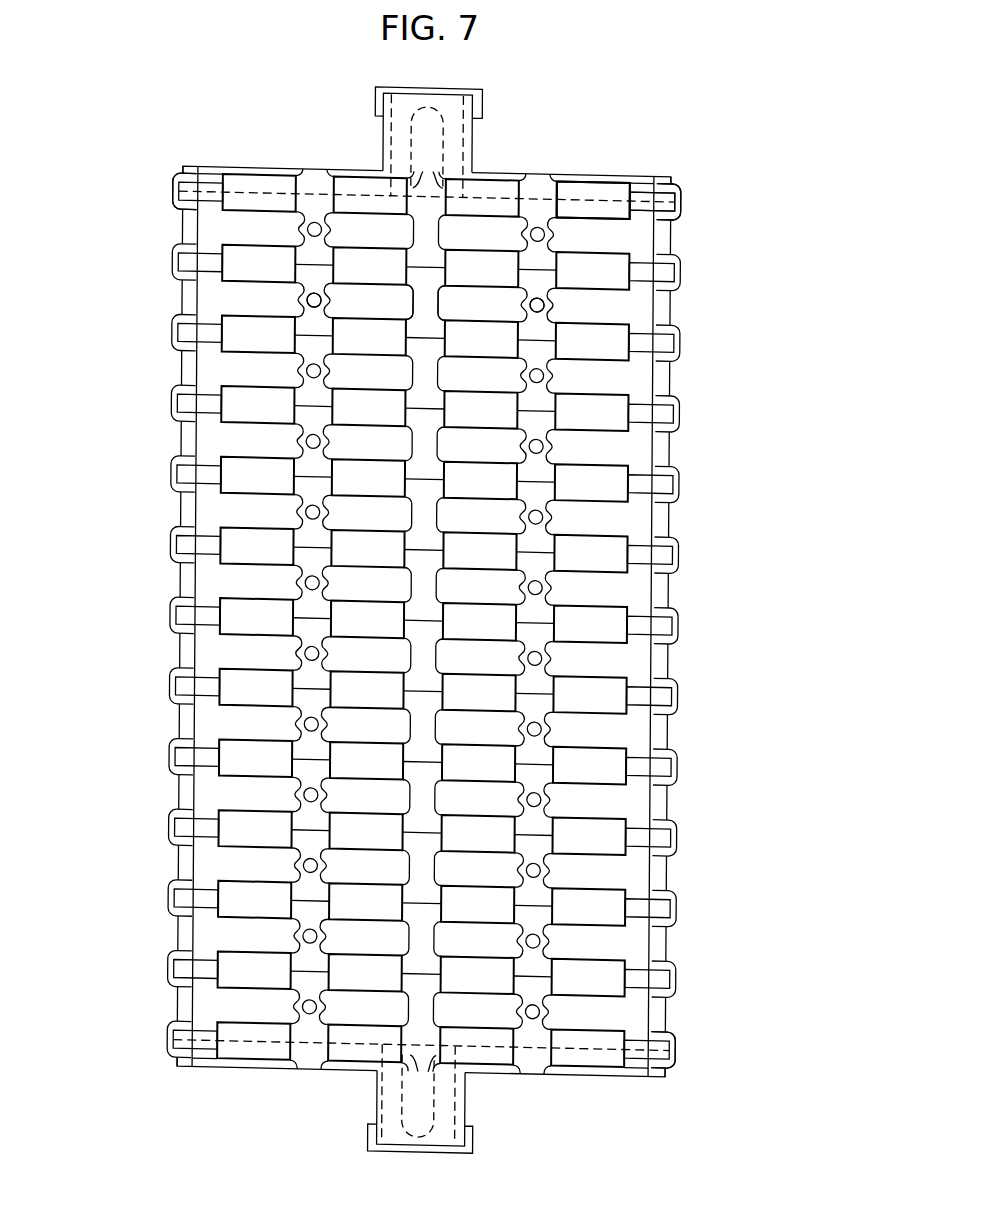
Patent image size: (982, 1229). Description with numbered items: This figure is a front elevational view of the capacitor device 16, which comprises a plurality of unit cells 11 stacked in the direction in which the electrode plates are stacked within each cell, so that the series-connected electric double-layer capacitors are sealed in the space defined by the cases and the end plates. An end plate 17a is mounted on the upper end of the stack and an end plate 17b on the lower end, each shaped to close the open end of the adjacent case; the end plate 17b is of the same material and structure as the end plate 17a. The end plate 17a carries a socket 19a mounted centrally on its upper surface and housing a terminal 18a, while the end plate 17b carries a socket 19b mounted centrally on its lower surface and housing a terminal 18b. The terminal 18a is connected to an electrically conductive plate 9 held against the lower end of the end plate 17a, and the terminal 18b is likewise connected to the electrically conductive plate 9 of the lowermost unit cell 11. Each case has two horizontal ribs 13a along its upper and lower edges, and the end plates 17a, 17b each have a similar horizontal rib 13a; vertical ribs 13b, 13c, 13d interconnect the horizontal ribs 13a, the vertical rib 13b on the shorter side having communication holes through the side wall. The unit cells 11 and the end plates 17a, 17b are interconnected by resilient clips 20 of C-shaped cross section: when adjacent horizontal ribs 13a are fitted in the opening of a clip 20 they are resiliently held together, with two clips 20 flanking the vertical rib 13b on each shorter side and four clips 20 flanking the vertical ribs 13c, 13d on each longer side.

The capacitor device 16 is at (630, 70).
The unit cell 11 is at (160, 231).
The electrically conductive plate 9 is at (481, 196).
The clip 20 is at (587, 181).
The horizontal rib 13a is at (648, 181).
The vertical rib 13b is at (673, 380).
The vertical rib 13c is at (322, 300).
The vertical rib 13d is at (428, 301).
The end plate 17a is at (284, 169).
The end plate 17b is at (583, 1077).
The terminal 18a is at (427, 106).
The terminal 18b is at (421, 1137).
The socket 19a is at (382, 150).
The socket 19b is at (466, 1106).